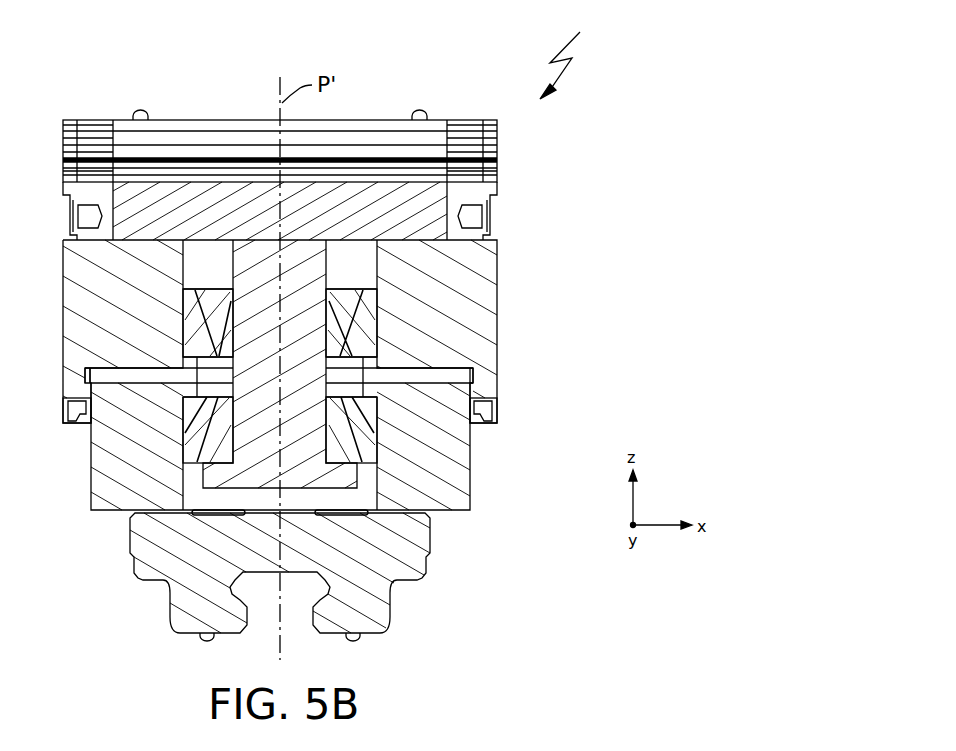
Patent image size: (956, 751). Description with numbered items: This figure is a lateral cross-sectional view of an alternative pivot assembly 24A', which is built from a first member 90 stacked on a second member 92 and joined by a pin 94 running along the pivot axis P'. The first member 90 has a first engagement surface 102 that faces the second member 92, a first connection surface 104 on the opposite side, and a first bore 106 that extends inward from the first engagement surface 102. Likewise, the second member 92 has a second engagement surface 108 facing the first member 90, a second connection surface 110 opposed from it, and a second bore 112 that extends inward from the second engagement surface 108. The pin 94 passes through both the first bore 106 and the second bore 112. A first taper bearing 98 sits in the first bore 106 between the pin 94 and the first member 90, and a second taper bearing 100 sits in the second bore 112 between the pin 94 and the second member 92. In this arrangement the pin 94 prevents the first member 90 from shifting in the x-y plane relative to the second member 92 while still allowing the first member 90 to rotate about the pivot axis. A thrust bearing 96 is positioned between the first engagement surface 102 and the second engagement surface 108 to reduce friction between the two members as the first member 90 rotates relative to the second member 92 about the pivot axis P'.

The pivot assembly 24A' is at (578, 49).
The first member 90 is at (487, 303).
The second member 92 is at (462, 493).
The pin 94 is at (300, 243).
The thrust bearing 96 is at (173, 373).
The first taper bearing 98 is at (367, 317).
The second taper bearing 100 is at (367, 435).
The first engagement surface 102 is at (442, 370).
The first connection surface 104 is at (163, 240).
The first bore 106 is at (370, 266).
The second engagement surface 108 is at (120, 383).
The second connection surface 110 is at (112, 513).
The second bore 112 is at (185, 498).